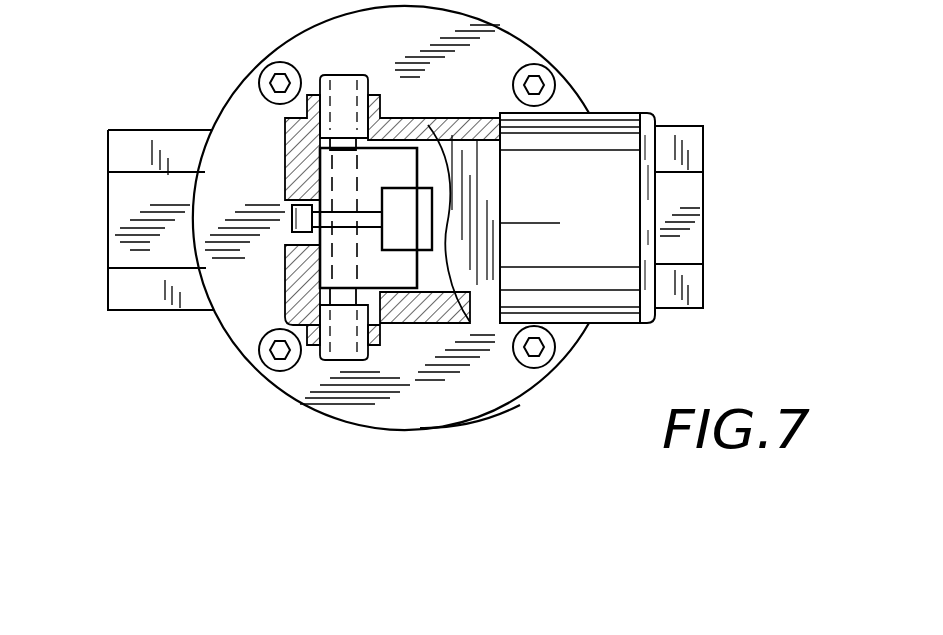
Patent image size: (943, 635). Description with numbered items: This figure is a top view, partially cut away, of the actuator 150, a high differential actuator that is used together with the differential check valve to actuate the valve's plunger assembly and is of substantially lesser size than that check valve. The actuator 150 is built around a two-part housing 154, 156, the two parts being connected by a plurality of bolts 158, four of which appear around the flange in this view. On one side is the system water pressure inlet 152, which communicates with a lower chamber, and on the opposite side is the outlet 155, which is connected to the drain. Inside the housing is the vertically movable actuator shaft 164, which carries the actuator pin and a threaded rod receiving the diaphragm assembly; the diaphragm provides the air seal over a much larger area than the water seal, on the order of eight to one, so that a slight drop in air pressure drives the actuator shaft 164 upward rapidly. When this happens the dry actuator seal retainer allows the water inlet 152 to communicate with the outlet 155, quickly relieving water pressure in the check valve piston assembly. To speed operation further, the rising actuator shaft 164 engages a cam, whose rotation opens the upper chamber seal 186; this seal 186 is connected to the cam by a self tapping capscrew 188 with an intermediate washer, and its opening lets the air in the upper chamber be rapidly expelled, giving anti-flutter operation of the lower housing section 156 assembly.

The actuator 150 is at (607, 100).
The system water pressure inlet 152 is at (645, 205).
The housing 154 is at (438, 325).
The outlet 155 is at (118, 240).
The lower housing section 156 is at (452, 405).
The bolts 158 is at (540, 70).
The actuator shaft 164 is at (398, 200).
The upper chamber seal 186 is at (292, 173).
The self tapping capscrew 188 is at (293, 222).